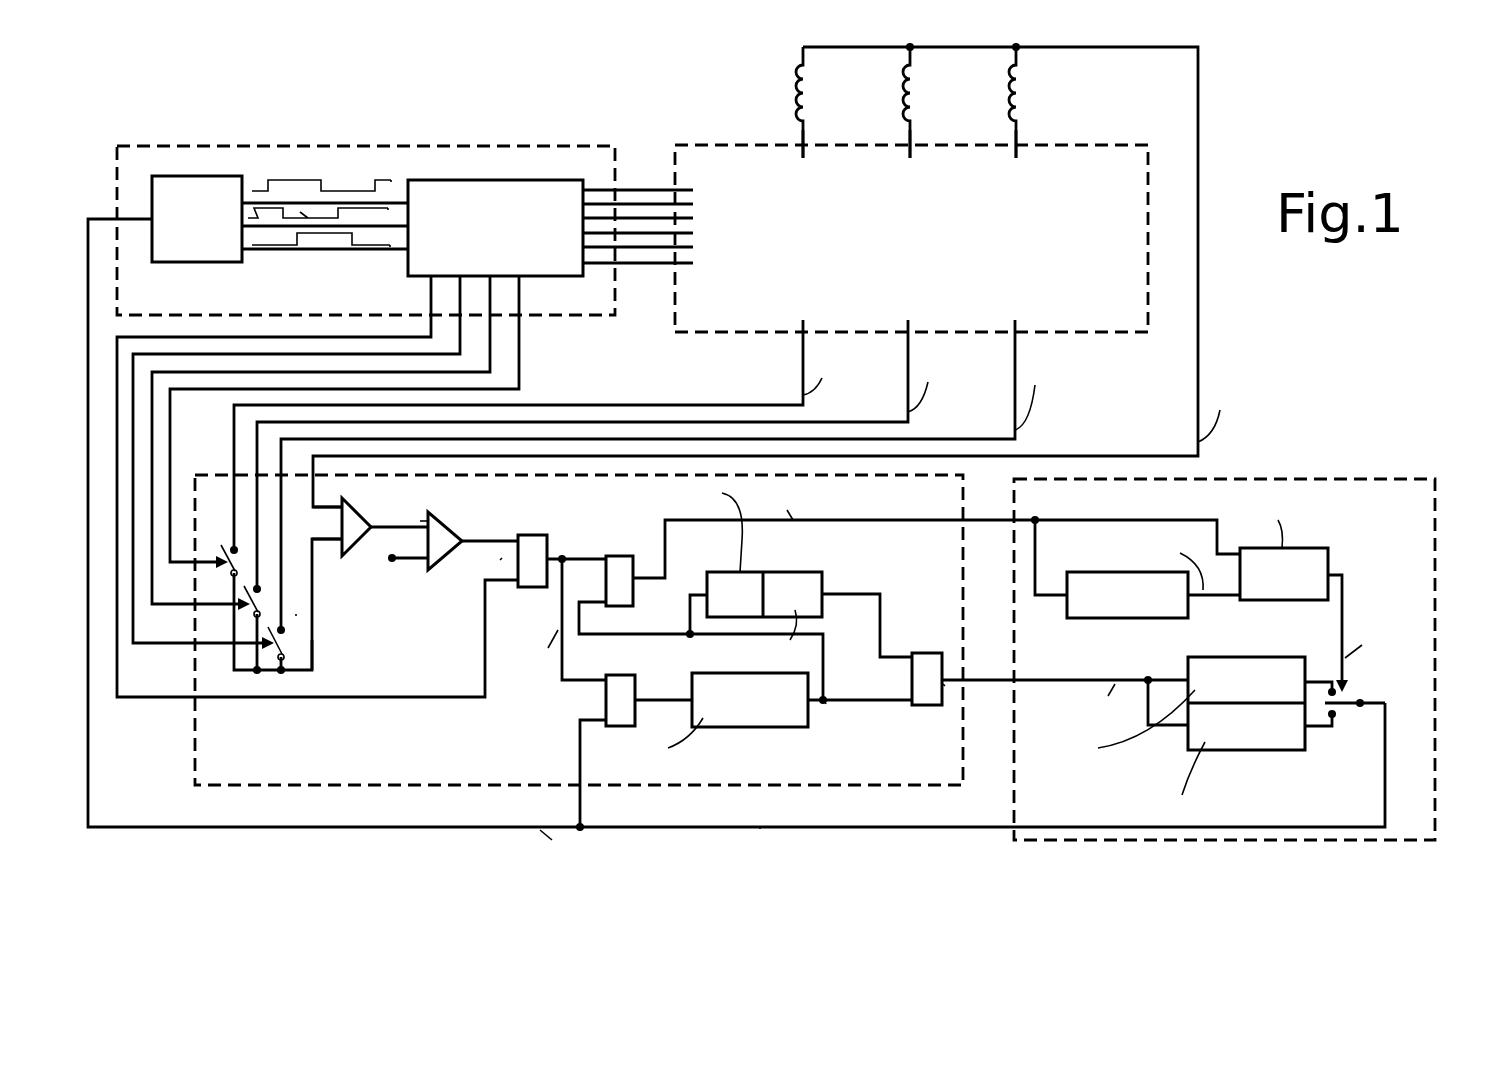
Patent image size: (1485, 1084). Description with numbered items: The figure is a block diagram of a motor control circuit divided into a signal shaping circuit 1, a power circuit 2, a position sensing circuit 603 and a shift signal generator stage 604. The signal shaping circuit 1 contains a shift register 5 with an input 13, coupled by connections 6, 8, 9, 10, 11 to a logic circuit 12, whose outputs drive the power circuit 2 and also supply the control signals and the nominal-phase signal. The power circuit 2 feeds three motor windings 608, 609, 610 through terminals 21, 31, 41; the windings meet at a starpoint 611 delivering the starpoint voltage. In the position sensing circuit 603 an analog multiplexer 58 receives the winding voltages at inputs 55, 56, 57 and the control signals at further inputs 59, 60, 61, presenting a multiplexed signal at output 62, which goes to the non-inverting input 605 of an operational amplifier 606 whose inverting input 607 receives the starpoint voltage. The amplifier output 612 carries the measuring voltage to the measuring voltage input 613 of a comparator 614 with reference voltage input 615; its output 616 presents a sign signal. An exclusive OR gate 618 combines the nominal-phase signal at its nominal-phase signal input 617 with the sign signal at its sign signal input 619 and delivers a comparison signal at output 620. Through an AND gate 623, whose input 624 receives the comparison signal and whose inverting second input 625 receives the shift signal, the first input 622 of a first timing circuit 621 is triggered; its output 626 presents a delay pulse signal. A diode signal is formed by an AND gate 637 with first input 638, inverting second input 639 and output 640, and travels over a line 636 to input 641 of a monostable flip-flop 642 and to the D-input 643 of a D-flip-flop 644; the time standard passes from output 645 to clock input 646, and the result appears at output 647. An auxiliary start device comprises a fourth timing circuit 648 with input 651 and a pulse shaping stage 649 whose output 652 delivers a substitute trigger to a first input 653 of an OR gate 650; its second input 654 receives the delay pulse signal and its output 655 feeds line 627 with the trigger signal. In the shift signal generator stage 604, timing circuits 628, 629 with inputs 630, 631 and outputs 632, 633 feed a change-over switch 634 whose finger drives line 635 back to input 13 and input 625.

The signal shaping circuit 1 is at (588, 141).
The power circuit 2 is at (1150, 196).
The shift register 5 is at (195, 176).
The shift register output line 6 is at (247, 193).
The shift register output line 8 is at (243, 258).
The signal 9 is at (400, 200).
The signal 10 is at (397, 213).
The signal 11 is at (396, 258).
The logic circuit 12 is at (500, 180).
The input of the shift register 13 is at (150, 216).
The winding terminal 21 is at (805, 150).
The winding terminal 31 is at (912, 150).
The winding terminal 41 is at (1018, 150).
The multiplexer input 55 is at (232, 532).
The multiplexer input 56 is at (258, 556).
The multiplexer input 57 is at (281, 590).
The analog multiplexer 58 is at (298, 604).
The further multiplexer input 59 is at (182, 560).
The further multiplexer input 60 is at (186, 603).
The further multiplexer input 61 is at (184, 642).
The multiplexer output 62 is at (313, 655).
The position sensing circuit 603 is at (958, 478).
The shift signal generator stage 604 is at (1430, 530).
The non-inverting input 605 is at (335, 545).
The operational amplifier 606 is at (362, 512).
The inverting input 607 is at (332, 507).
The motor winding 608 is at (814, 95).
The motor winding 609 is at (920, 95).
The motor winding 610 is at (1026, 95).
The starpoint 611 is at (933, 45).
The output of the operational amplifier 612 is at (393, 526).
The measuring voltage input 613 is at (418, 522).
The comparator 614 is at (448, 520).
The reference voltage input 615 is at (390, 562).
The output of the comparator 616 is at (480, 535).
The nominal-phase signal input 617 is at (494, 585).
The exclusive OR gate 618 is at (540, 535).
The sign signal input 619 is at (500, 560).
The output of the exclusive OR gate 620 is at (562, 555).
The first timing circuit 621 is at (750, 727).
The first input of the first timing circuit 622 is at (663, 687).
The AND gate 623 is at (620, 675).
The input of the AND gate 624 is at (562, 678).
The second input of the AND gate 625 is at (586, 719).
The output of the first timing circuit 626 is at (826, 704).
The line 627 is at (1032, 684).
The second timing circuit 628 is at (1268, 657).
The third timing circuit 629 is at (1245, 750).
The input of the second timing circuit 630 is at (1152, 676).
The input of the third timing circuit 631 is at (1160, 730).
The output of the second timing circuit 632 is at (1318, 660).
The output of the third timing circuit 633 is at (1310, 728).
The change-over switch 634 is at (1355, 717).
The line 635 is at (760, 829).
The line 636 is at (1010, 524).
The AND gate 637 is at (630, 556).
The first input of the AND gate 638 is at (597, 549).
The second input of the AND gate 639 is at (600, 603).
The output of the AND gate 640 is at (645, 585).
The input of the monostable flip-flop 641 is at (1038, 603).
The monostable flip-flop 642 is at (1085, 618).
The D-input 643 is at (1222, 565).
The D-flip-flop 644 is at (1255, 600).
The output of the monostable flip-flop 645 is at (1188, 600).
The clock input 646 is at (1210, 599).
The output of the D-flip-flop 647 is at (1330, 571).
The fourth timing circuit 648 is at (724, 572).
The pulse shaping stage 649 is at (793, 572).
The OR gate 650 is at (928, 652).
The input of the fourth timing circuit 651 is at (693, 593).
The output of the pulse shaping stage 652 is at (878, 590).
The first input of the OR gate 653 is at (880, 655).
The second input of the OR gate 654 is at (888, 699).
The output of the OR gate 655 is at (945, 686).